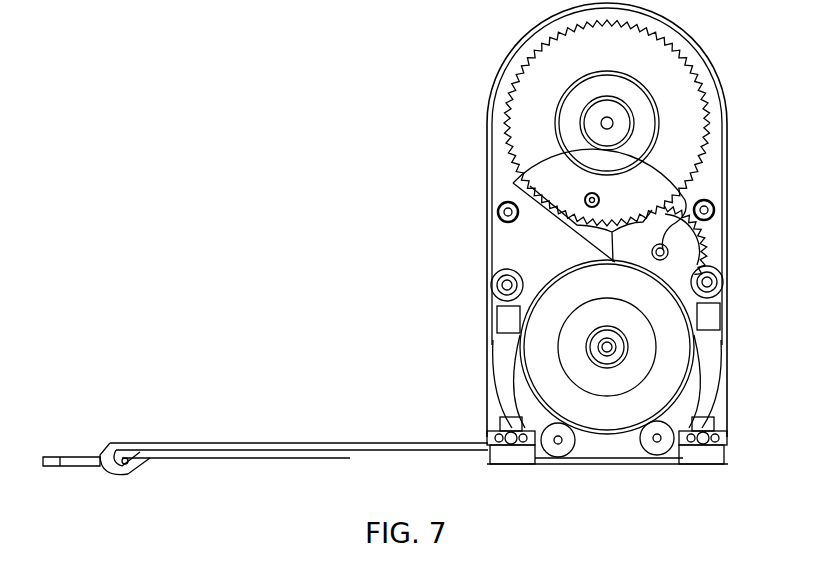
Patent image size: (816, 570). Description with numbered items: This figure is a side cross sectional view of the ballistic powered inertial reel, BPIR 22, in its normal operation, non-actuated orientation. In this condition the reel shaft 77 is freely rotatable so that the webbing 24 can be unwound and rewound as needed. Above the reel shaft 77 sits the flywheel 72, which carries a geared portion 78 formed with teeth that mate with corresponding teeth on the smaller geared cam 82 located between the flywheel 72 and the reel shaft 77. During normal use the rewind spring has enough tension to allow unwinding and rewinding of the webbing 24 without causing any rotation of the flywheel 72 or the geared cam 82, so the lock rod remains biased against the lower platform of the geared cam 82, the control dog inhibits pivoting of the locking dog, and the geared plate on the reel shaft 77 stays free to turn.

The BPIR 22 is at (288, 206).
The webbing 24 is at (233, 445).
The flywheel 72 is at (520, 108).
The reel shaft 77 is at (628, 350).
The geared portion 78 is at (688, 66).
The geared cam 82 is at (683, 245).